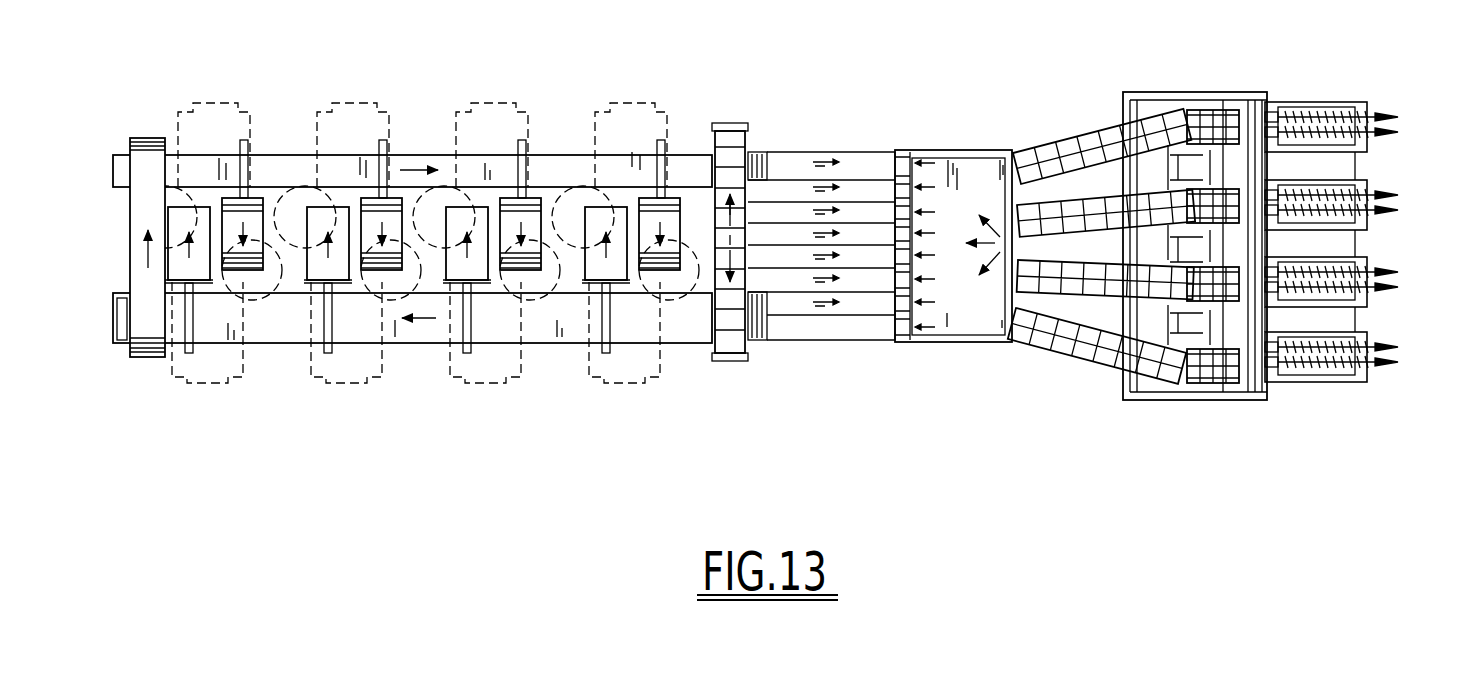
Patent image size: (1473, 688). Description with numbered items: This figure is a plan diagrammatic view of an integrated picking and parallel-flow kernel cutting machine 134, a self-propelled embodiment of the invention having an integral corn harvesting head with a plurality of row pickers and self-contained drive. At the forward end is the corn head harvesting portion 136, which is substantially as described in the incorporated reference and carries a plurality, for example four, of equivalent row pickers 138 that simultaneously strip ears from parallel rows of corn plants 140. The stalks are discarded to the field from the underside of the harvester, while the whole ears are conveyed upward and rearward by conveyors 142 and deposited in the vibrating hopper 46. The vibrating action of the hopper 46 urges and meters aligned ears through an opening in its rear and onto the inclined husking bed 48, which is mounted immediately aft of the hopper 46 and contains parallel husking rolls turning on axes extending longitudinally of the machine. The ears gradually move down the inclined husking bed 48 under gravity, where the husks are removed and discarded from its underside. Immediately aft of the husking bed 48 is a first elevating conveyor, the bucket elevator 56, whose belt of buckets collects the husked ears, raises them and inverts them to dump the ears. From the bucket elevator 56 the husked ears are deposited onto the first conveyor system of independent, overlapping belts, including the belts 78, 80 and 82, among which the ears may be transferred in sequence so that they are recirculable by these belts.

The vibrating hopper 46 is at (993, 316).
The inclined husking bed 48 is at (845, 152).
The bucket elevator 56 is at (735, 124).
The belt 78 is at (685, 325).
The belt 80 is at (141, 212).
The belt 82 is at (302, 168).
The integrated machine 134 is at (806, 58).
The corn head harvesting portion 136 is at (1232, 78).
The row pickers 138 is at (1358, 102).
The corn plants 140 is at (1400, 124).
The conveyors 142 is at (1082, 207).